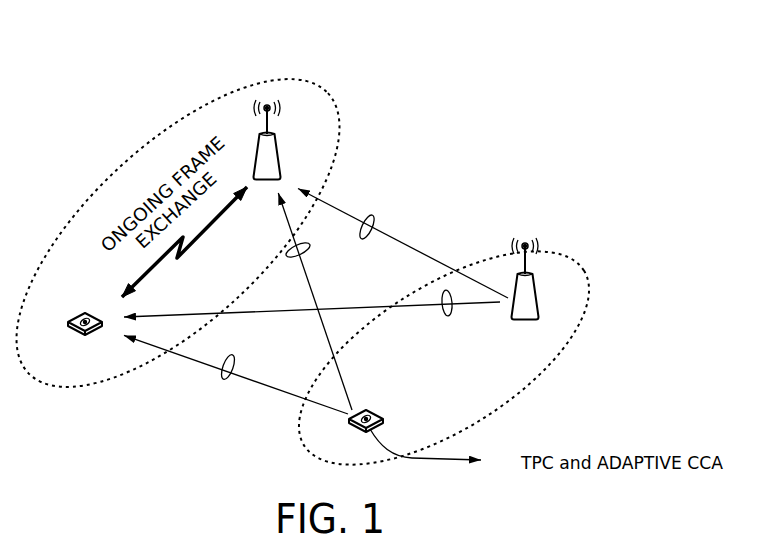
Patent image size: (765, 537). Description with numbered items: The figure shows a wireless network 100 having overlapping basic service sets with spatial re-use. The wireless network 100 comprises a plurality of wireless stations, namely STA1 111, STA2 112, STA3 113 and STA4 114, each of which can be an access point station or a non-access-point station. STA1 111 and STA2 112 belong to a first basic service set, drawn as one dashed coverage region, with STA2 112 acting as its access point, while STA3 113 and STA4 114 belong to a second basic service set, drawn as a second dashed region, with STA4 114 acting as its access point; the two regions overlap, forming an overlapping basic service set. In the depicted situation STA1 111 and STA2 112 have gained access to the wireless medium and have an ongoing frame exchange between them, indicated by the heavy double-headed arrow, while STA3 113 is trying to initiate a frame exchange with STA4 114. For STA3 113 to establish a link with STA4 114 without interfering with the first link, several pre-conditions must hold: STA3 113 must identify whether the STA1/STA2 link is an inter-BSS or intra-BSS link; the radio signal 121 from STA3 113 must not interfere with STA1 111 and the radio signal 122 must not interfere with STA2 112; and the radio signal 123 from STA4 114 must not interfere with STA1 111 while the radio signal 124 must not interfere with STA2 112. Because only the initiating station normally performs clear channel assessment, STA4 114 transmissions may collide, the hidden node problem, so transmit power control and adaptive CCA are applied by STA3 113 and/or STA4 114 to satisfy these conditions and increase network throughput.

The wireless network 100 is at (739, 70).
The wireless station STA1 111 is at (88, 309).
The wireless station STA2 112 is at (267, 104).
The wireless station STA3 113 is at (356, 409).
The wireless station STA4 114 is at (525, 241).
The radio signal 121 is at (224, 379).
The radio signal 122 is at (291, 257).
The radio signal 123 is at (450, 317).
The radio signal 124 is at (365, 240).